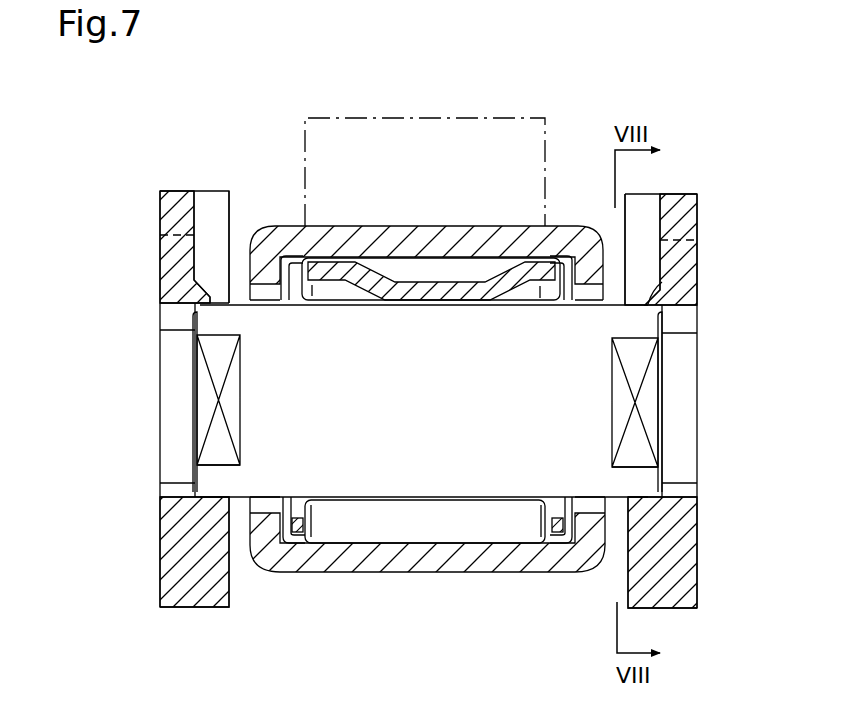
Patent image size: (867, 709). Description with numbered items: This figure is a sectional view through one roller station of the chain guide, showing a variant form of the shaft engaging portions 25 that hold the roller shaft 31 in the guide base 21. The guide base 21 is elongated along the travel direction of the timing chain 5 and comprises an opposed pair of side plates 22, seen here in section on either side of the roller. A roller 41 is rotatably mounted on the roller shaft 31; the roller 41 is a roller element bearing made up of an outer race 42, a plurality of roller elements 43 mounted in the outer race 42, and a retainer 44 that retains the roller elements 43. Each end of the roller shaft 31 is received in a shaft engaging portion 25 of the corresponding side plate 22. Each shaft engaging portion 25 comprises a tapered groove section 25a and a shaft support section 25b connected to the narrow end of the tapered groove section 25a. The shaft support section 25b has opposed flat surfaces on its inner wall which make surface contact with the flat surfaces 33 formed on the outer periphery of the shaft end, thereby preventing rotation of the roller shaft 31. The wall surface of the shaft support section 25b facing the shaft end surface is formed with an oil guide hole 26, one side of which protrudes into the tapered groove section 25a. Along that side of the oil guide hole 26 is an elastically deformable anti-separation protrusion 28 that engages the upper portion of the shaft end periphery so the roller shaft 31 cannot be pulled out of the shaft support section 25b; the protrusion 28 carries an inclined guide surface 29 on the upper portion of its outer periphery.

The timing chain 5 is at (334, 113).
The guide base 21 is at (156, 211).
The side plates 22 is at (168, 268).
The shaft engaging portions 25 is at (200, 192).
The tapered groove section 25a is at (218, 192).
The shaft support section 25b is at (205, 445).
The oil guide hole 26 is at (178, 432).
The anti-separation protrusion 28 is at (662, 298).
The inclined guide surface 29 is at (660, 270).
The roller shaft 31 is at (440, 413).
The flat surfaces 33 is at (208, 395).
The roller 41 is at (282, 224).
The outer race 42 is at (353, 225).
The roller elements 43 is at (413, 225).
The retainer 44 is at (480, 225).